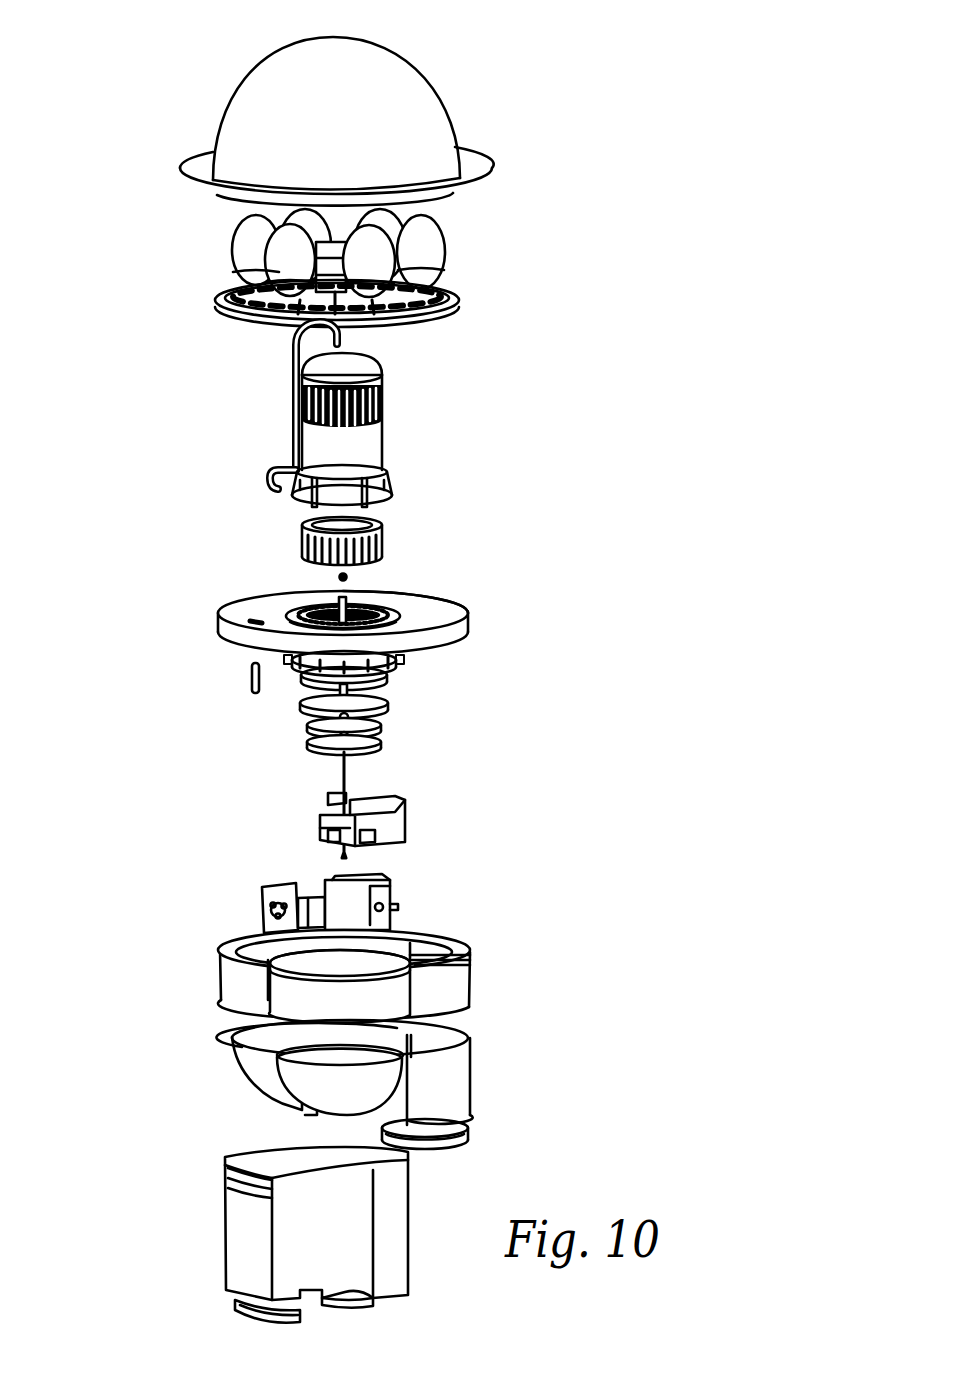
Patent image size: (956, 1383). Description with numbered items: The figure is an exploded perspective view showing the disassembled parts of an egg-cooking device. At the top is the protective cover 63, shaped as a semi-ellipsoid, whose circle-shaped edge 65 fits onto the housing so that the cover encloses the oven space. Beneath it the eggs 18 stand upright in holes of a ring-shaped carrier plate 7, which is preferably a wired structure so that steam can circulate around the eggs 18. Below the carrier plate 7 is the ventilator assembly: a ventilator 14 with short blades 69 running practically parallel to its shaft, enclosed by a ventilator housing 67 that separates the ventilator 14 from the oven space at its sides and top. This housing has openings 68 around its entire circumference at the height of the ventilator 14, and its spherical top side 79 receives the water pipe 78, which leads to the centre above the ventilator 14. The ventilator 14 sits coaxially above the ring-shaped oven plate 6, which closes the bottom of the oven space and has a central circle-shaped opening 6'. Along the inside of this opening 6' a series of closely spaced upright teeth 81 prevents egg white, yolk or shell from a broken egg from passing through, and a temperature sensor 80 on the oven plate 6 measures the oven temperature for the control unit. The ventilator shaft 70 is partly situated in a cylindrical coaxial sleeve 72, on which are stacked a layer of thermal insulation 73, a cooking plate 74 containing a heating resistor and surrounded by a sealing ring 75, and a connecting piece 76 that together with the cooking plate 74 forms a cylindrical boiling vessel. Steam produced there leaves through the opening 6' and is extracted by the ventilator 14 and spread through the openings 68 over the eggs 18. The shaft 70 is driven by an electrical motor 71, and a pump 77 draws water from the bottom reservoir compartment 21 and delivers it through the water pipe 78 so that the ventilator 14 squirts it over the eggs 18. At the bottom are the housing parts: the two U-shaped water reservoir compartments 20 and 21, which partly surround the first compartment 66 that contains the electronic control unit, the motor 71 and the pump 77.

The protective cover 63 is at (360, 87).
The circle-shaped edge 65 is at (440, 203).
The eggs 18 is at (245, 245).
The carrier plate 7 is at (222, 305).
The water pipe 78 is at (295, 347).
The spherical top side 79 is at (357, 366).
The openings 68 is at (382, 402).
The ventilator housing 67 is at (380, 443).
The blades 69 is at (383, 542).
The ventilator 14 is at (297, 536).
The oven plate 6 is at (273, 632).
The circle-shaped opening 6' is at (454, 591).
The upright teeth 81 is at (290, 620).
The temperature sensor 80 is at (252, 688).
The connecting piece 76 is at (385, 676).
The cylindrical co-axial sleeve 72 is at (350, 690).
The sealing ring 75 is at (388, 713).
The cooking plate 74 is at (312, 730).
The layer of thermal insulation 73 is at (320, 752).
The shaft 70 is at (350, 768).
The electrical motor 71 is at (380, 838).
The pump 77 is at (347, 912).
The compartment 20 is at (460, 997).
The bottom compartment 21 is at (442, 1084).
The first compartment 66 is at (245, 1232).